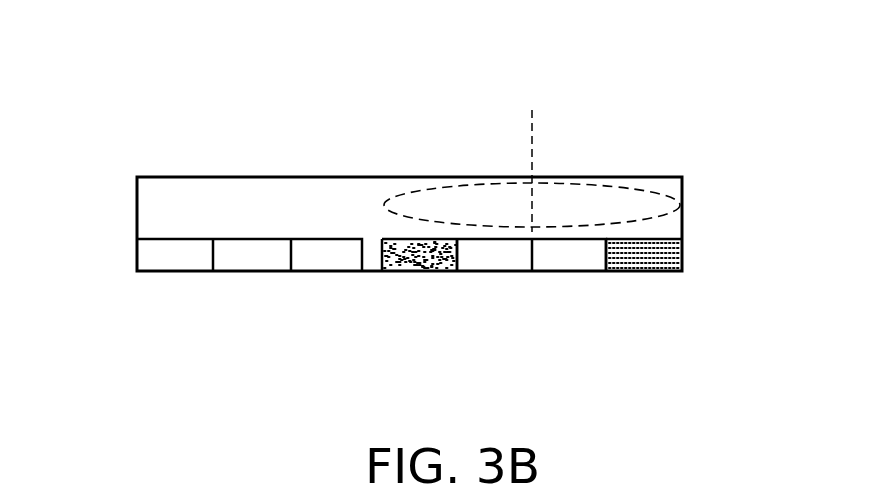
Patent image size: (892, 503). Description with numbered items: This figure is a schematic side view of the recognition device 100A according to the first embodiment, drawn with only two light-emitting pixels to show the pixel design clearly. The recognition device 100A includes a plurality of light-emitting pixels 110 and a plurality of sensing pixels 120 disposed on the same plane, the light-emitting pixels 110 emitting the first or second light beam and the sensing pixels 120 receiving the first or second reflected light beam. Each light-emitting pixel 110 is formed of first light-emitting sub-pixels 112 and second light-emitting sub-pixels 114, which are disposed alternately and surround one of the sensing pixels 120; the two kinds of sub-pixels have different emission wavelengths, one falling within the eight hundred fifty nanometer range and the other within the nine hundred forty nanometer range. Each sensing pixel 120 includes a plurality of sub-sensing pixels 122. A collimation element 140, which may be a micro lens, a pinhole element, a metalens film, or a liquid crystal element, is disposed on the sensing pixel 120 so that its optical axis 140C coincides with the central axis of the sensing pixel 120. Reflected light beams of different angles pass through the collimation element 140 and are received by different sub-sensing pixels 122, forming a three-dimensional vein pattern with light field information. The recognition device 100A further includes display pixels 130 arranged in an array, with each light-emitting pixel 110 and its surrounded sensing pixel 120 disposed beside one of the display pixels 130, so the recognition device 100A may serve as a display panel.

The recognition device 100A is at (782, 381).
The light-emitting pixel 110 is at (411, 305).
The first light-emitting sub-pixel 112 is at (434, 262).
The second light-emitting sub-pixel 114 is at (645, 262).
The sensing pixel 120 is at (573, 306).
The sub-sensing pixel 122 is at (590, 271).
The display pixel 130 is at (161, 239).
The collimation element 140 is at (636, 188).
The optical axis of the collimation element 140C is at (557, 132).